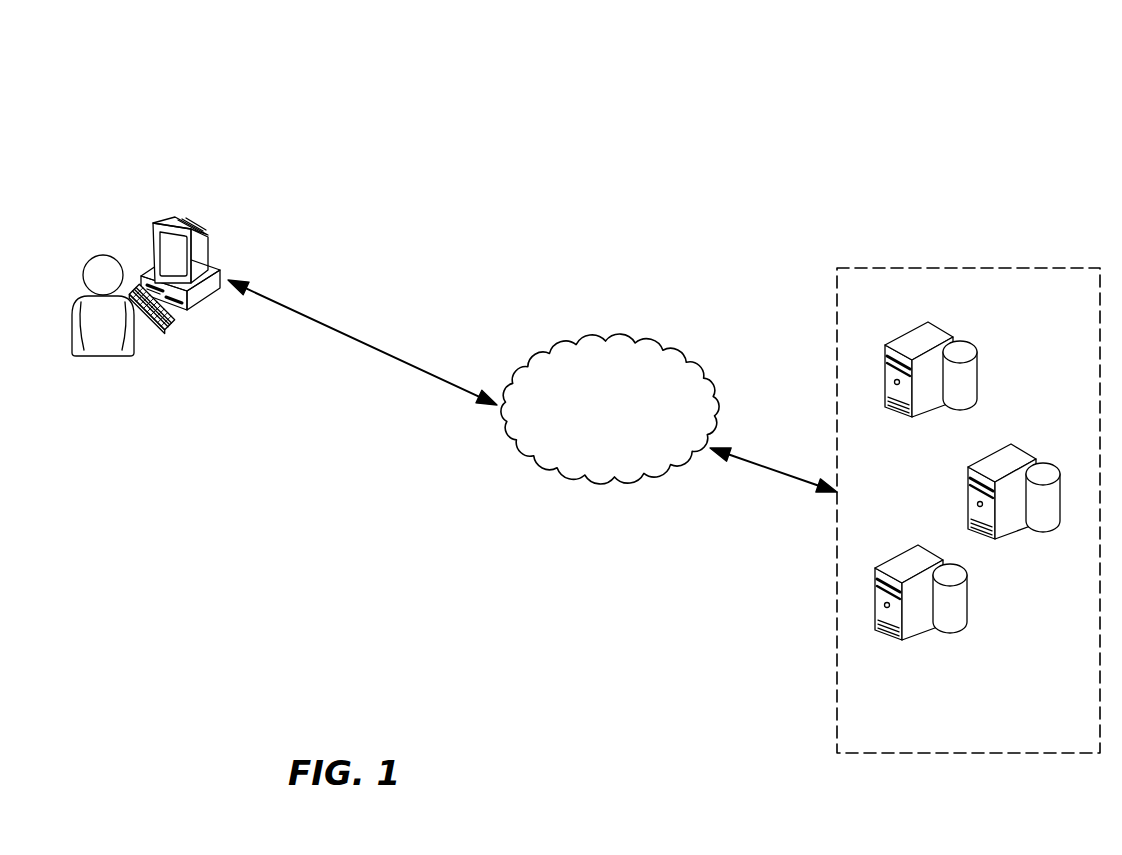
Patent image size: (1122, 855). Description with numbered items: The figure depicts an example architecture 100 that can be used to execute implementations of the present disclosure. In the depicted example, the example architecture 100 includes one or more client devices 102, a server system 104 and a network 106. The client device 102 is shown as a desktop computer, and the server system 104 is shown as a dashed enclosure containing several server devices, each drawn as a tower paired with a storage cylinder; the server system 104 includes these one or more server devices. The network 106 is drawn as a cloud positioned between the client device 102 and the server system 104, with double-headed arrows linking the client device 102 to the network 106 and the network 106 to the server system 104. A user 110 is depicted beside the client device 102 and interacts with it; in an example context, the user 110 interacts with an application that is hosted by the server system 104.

The example architecture 100 is at (453, 80).
The client device 102 is at (150, 230).
The server system 104 is at (968, 268).
The network 106 is at (613, 334).
The user 110 is at (103, 356).